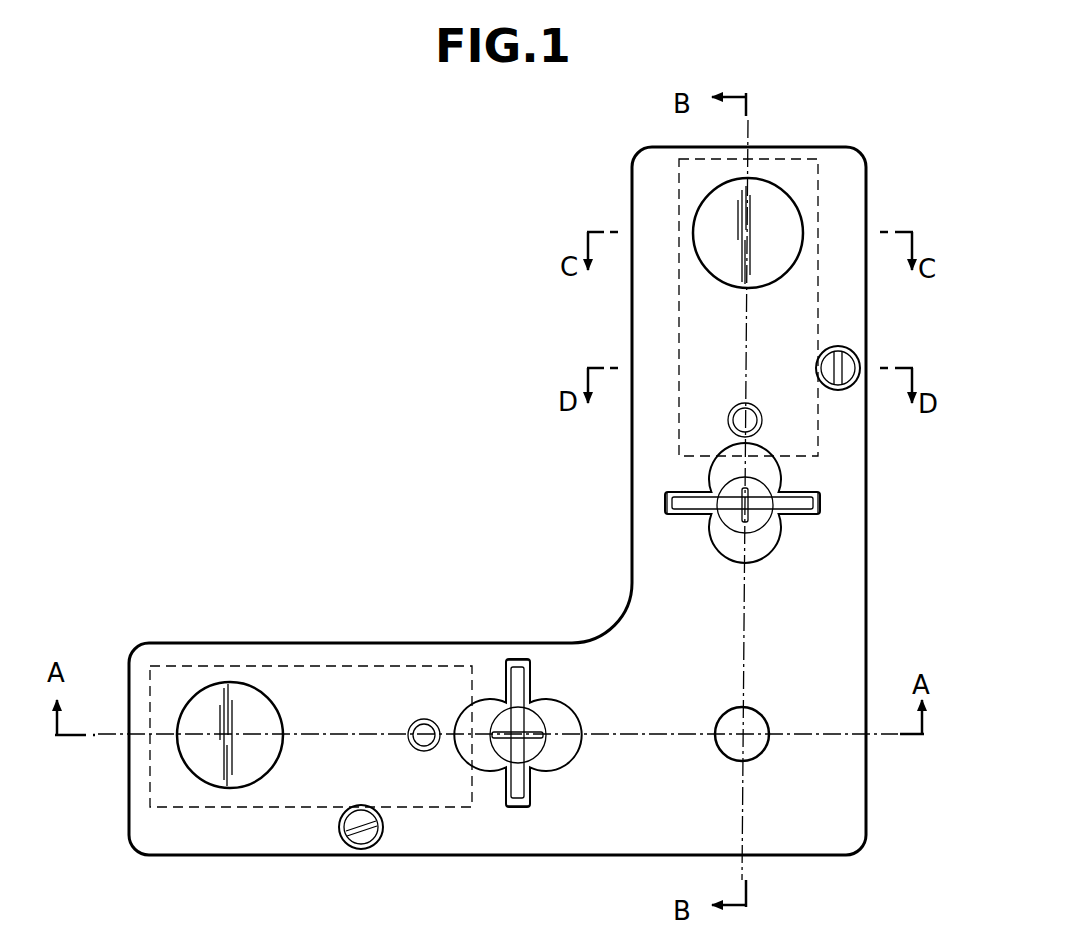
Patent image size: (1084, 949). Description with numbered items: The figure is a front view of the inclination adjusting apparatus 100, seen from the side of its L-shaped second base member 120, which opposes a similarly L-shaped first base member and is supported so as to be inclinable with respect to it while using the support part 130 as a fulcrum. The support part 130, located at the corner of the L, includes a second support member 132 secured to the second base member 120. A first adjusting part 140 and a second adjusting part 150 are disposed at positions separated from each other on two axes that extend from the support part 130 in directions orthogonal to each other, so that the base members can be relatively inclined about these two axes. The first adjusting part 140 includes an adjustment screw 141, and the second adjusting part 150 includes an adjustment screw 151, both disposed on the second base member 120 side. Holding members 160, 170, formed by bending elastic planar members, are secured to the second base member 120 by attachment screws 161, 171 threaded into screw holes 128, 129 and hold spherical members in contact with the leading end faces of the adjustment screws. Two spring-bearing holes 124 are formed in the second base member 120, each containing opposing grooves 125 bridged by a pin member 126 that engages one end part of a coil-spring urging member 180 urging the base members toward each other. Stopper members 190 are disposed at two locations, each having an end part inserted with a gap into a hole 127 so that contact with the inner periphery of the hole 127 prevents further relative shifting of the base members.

The inclination adjusting apparatus 100 is at (520, 406).
The second base member 120 is at (652, 859).
The spring-bearing hole 124 is at (765, 490).
The groove 125 is at (668, 503).
The pin member 126 is at (805, 500).
The hole 127 is at (826, 366).
The screw hole 128 is at (426, 749).
The screw hole 129 is at (762, 427).
The support part 130 is at (775, 800).
The second support member 132 is at (764, 745).
The first adjusting part 140 is at (258, 641).
The adjustment screw 141 is at (272, 694).
The second adjusting part 150 is at (838, 221).
The adjustment screw 151 is at (796, 198).
The holding member 160 is at (296, 807).
The attachment screw 161 is at (423, 720).
The holding member 170 is at (819, 319).
The attachment screw 171 is at (736, 414).
The urging member 180 is at (760, 530).
The stopper member 190 is at (851, 358).